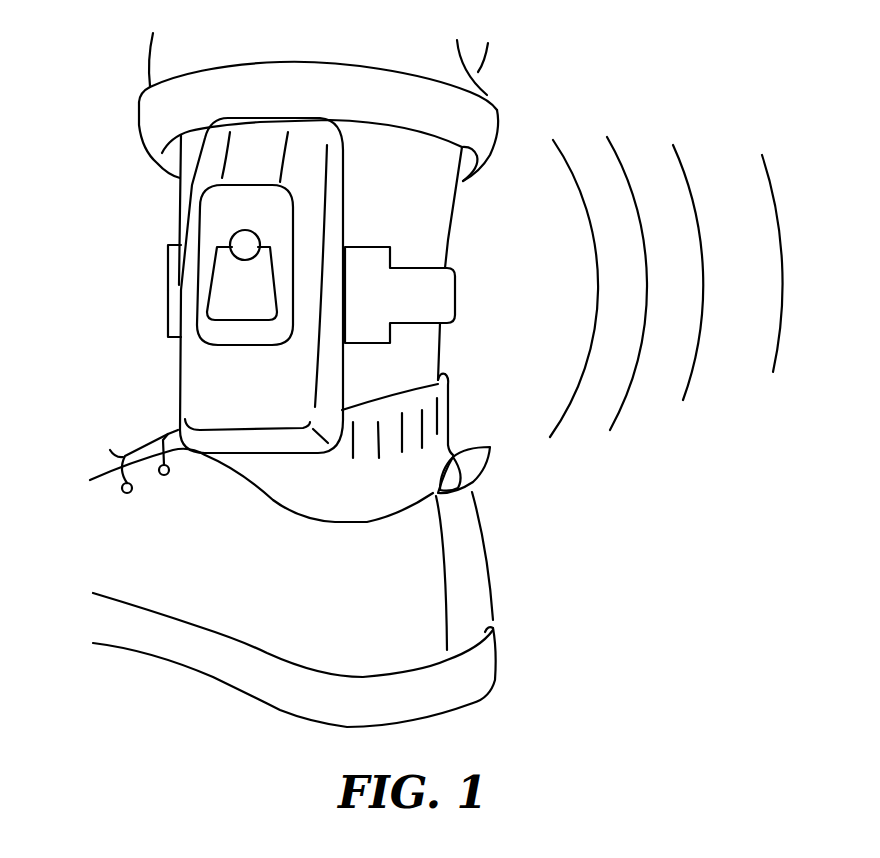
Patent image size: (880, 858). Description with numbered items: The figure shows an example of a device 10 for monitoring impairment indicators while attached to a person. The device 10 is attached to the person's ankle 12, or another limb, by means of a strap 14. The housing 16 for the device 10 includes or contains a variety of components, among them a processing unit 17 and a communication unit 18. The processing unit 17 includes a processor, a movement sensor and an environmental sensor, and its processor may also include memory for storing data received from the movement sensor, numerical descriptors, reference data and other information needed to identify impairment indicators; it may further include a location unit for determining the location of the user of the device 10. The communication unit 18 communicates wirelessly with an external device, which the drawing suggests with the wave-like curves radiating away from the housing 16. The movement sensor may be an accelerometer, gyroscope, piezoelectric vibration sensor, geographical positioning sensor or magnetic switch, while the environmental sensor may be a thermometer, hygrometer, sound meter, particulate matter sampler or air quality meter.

The device 10 is at (150, 227).
The ankle 12 is at (433, 197).
The strap 14 is at (457, 302).
The housing 16 is at (200, 378).
The processing unit 17 is at (105, 286).
The communication unit 18 is at (104, 246).